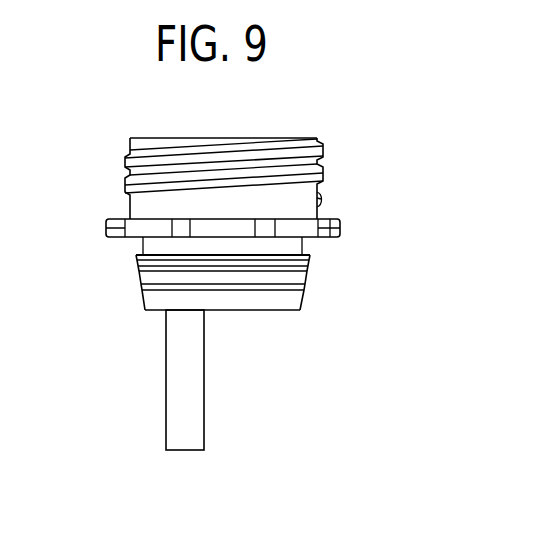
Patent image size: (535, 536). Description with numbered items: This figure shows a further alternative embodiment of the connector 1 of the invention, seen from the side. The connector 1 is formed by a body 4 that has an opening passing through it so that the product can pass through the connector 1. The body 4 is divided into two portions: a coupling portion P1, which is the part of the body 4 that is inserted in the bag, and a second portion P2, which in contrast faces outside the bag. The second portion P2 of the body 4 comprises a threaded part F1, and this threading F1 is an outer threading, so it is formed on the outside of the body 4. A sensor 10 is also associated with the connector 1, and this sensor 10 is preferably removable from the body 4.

The connector 1 is at (221, 226).
The body 4 is at (119, 206).
The sensor 10 is at (207, 356).
The threaded part F1 is at (118, 167).
The coupling portion P1 is at (319, 285).
The second portion P2 is at (220, 134).